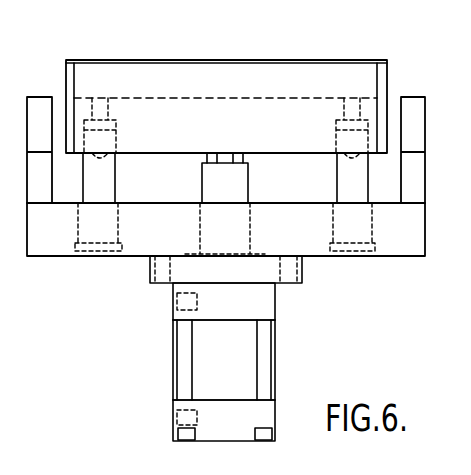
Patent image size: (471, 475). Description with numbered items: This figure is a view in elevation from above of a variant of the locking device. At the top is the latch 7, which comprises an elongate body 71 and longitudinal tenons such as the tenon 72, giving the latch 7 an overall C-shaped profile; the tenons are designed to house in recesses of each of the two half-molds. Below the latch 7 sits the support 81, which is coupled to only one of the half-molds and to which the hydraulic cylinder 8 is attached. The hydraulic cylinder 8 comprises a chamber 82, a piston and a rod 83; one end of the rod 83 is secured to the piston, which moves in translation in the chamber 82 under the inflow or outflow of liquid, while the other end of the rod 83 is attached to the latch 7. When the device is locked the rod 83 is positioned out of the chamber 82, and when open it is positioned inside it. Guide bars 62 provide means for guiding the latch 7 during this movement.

The latch 7 is at (346, 57).
The elongate body 71 is at (278, 128).
The longitudinal tenon 72 is at (96, 75).
The support 81 is at (44, 222).
The guide bars 62 is at (97, 173).
The rod 83 is at (222, 185).
The hydraulic cylinder 8 is at (170, 380).
The chamber 82 is at (210, 352).